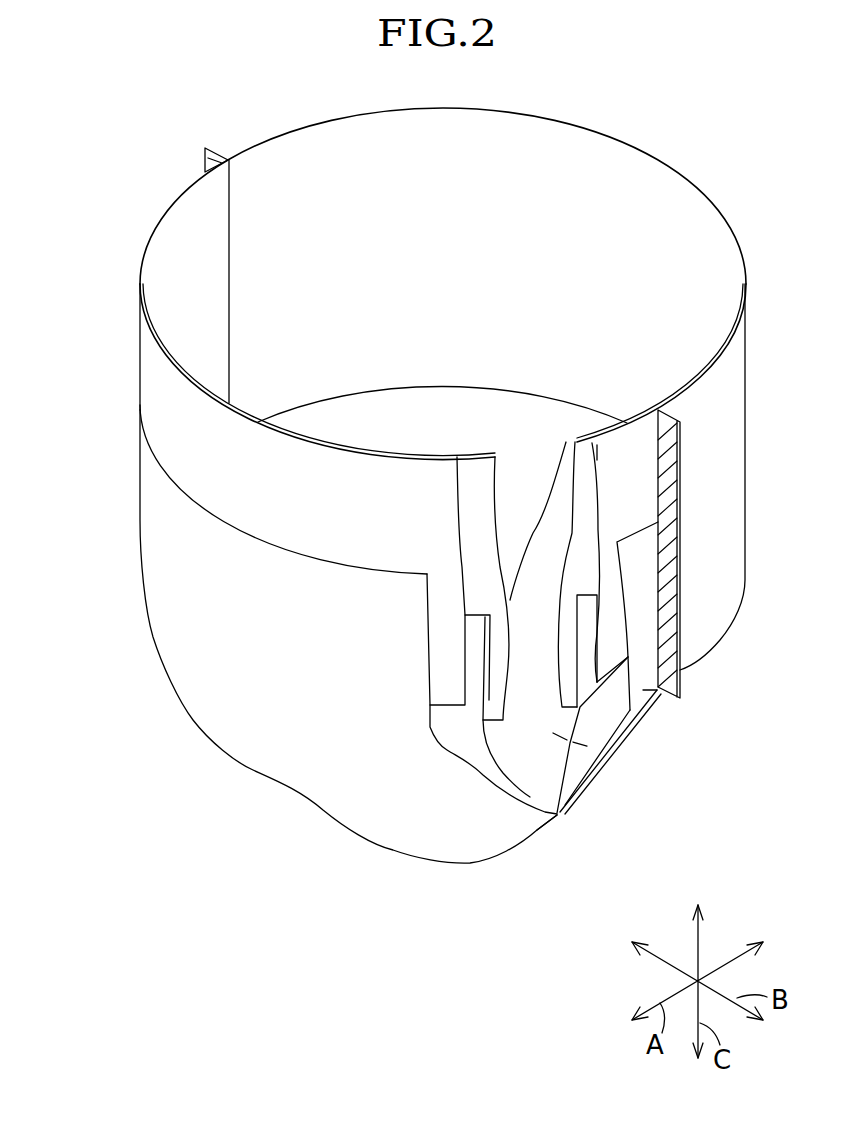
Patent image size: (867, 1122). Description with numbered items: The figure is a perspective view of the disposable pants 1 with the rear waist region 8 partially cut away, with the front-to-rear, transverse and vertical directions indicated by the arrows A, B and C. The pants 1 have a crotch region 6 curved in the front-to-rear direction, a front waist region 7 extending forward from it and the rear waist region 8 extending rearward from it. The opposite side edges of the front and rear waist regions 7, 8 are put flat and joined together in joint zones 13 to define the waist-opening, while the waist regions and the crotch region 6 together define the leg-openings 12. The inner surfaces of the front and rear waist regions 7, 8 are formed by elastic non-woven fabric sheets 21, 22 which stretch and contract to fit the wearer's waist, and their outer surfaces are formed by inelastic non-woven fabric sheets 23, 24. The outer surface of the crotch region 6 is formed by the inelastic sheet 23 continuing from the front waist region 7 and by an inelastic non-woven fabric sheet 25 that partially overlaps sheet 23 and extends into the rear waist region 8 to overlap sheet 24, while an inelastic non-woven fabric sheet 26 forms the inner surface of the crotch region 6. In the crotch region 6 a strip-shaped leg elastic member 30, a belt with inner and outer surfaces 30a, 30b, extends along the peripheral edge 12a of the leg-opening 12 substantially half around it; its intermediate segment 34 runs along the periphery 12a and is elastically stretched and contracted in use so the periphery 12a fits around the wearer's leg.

The pants 1 is at (689, 117).
The crotch region 6 is at (312, 785).
The front waist region 7 is at (740, 356).
The rear waist region 8 is at (155, 517).
The leg-opening 12 is at (410, 420).
The peripheral edge of the leg-opening 12a is at (643, 690).
The joint zone 13 is at (667, 468).
The elastic non-woven fabric sheet 21 is at (575, 145).
The elastic non-woven fabric sheet 22 is at (478, 483).
The inelastic non-woven fabric sheet 23 is at (740, 388).
The inelastic non-woven fabric sheet 24 is at (152, 362).
The inelastic non-woven fabric sheet 25 is at (645, 590).
The inelastic non-woven fabric sheet 26 is at (567, 470).
The leg elastic member 30 is at (552, 745).
The inner surface of the leg elastic member 30a is at (560, 745).
The outer surface of the leg elastic member 30b is at (608, 753).
The intermediate segment 34 is at (567, 778).